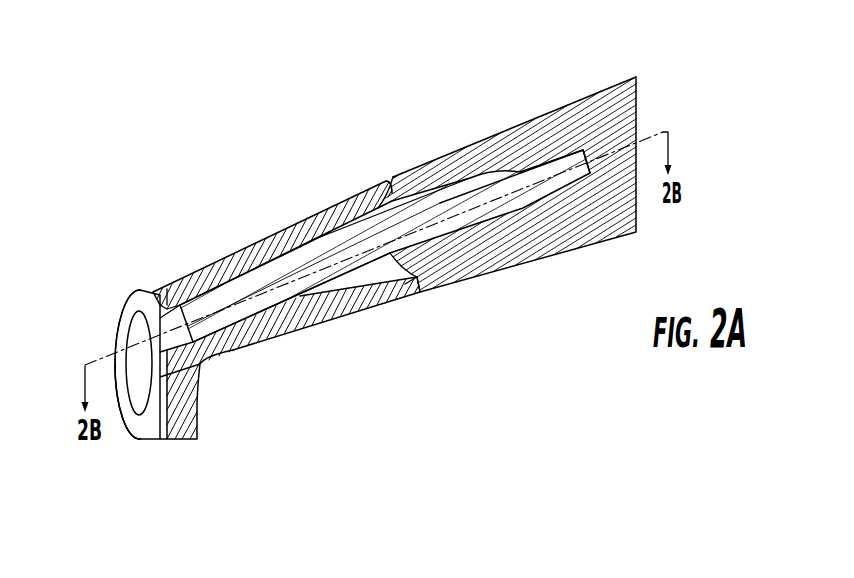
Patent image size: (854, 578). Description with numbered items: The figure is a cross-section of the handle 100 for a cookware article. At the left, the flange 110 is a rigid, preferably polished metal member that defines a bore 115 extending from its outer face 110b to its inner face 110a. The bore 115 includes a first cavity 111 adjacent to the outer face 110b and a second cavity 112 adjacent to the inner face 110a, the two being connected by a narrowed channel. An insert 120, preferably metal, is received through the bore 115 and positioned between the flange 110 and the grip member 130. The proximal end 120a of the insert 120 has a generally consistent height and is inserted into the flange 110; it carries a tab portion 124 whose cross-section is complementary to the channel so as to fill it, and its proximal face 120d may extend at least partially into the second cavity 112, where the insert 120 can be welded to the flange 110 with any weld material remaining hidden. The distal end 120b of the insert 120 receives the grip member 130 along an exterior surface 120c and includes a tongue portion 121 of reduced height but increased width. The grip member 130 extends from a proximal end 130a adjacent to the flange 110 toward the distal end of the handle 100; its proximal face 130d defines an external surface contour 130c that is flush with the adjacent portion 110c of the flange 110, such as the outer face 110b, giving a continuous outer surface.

The handle 100 is at (396, 135).
The flange 110 is at (182, 436).
The inner face 110a is at (148, 442).
The outer face 110b is at (424, 283).
The adjacent portion 110c is at (387, 314).
The first cavity 111 is at (312, 249).
The second cavity 112 is at (168, 317).
The bore 115 is at (333, 216).
The insert 120 is at (318, 282).
The proximal end 120a is at (296, 307).
The distal end 120b is at (533, 163).
The exterior surface 120c is at (460, 190).
The proximal face 120d is at (120, 428).
The tongue portion 121 is at (594, 174).
The tab portion 124 is at (193, 285).
The grip member 130 is at (553, 243).
The proximal end 130a is at (519, 117).
The external surface contour 130c is at (417, 282).
The proximal face 130d is at (393, 193).